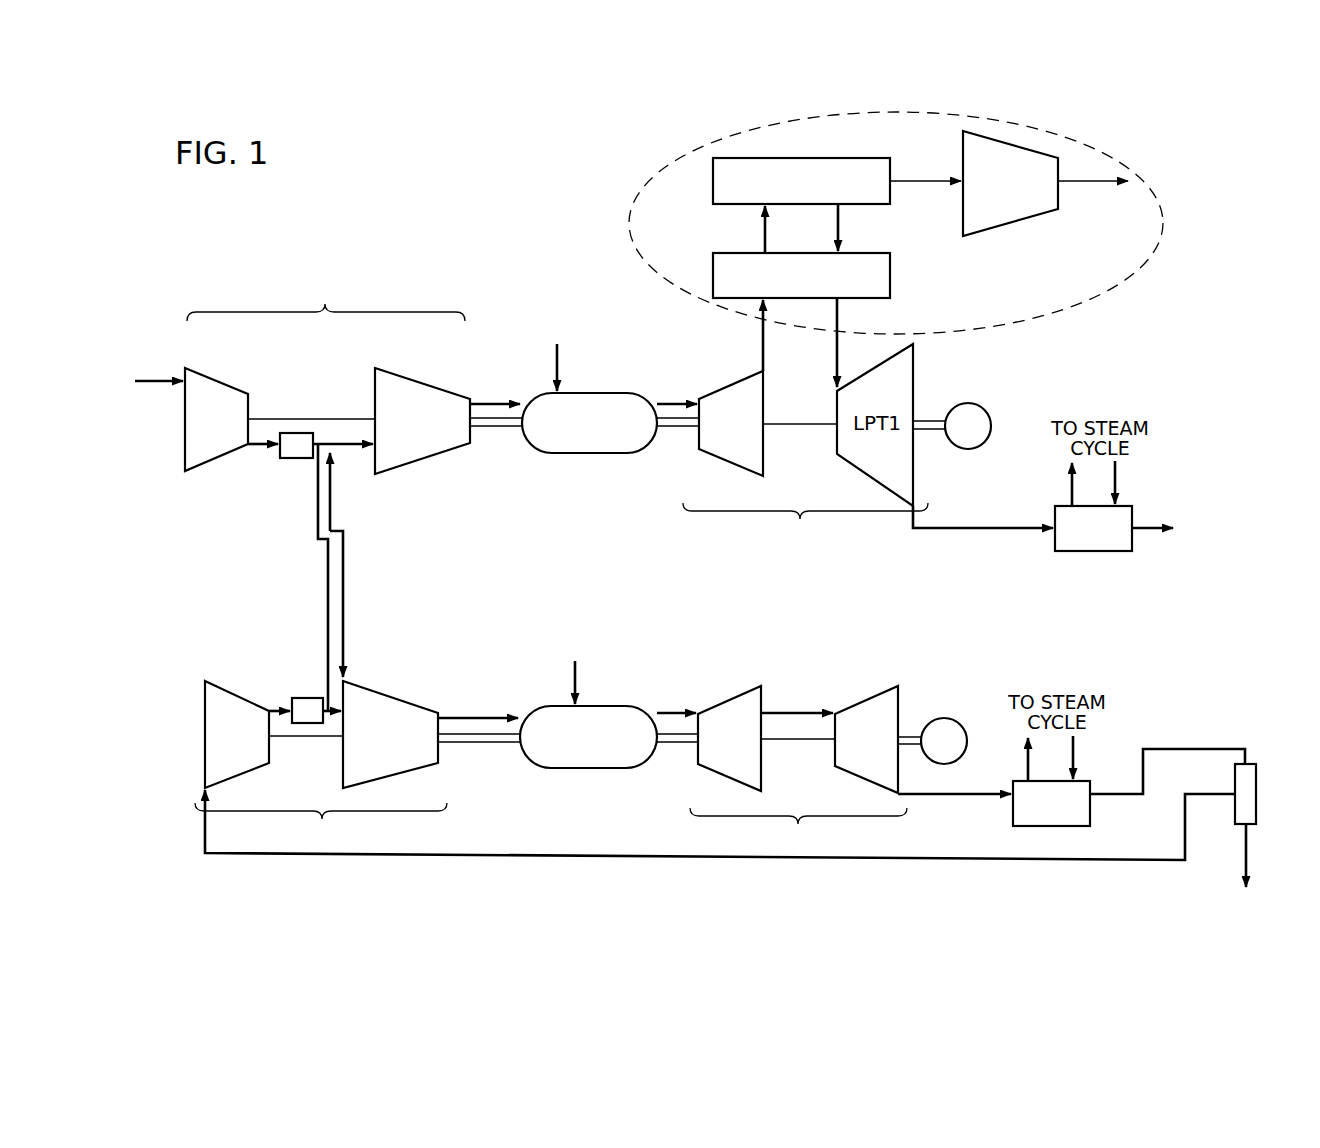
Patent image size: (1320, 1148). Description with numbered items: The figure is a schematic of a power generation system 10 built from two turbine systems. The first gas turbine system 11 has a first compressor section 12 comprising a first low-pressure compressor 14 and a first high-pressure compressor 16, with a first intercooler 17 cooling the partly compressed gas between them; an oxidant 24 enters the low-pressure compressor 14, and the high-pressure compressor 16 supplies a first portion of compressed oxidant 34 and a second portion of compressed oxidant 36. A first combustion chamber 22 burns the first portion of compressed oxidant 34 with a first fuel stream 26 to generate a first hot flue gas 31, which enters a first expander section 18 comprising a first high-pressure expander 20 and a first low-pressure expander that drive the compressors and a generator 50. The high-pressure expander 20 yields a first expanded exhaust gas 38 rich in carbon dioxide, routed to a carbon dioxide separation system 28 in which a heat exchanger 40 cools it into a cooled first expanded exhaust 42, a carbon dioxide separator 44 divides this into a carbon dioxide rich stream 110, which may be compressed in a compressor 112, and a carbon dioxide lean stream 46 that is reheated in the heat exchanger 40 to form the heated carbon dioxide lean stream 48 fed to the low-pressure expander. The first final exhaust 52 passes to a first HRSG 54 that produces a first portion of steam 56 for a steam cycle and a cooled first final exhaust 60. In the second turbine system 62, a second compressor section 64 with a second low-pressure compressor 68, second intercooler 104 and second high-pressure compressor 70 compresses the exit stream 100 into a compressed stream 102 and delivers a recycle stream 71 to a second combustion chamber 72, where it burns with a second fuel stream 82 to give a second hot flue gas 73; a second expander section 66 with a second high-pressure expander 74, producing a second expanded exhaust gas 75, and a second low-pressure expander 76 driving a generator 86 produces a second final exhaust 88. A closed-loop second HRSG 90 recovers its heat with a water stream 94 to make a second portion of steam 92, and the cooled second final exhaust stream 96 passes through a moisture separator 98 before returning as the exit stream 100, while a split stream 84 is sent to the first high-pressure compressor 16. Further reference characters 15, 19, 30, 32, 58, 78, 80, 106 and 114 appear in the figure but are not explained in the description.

The power generation system 10 is at (338, 206).
The gas turbine system 11 is at (514, 252).
The first compressor section 12 is at (326, 300).
The first low-pressure compressor 14 is at (216, 378).
The flow path from LPC1 to intercooler 15 is at (258, 452).
The first high-pressure compressor 16 is at (422, 376).
The first intercooler 17 is at (292, 460).
The first expander section 18 is at (805, 483).
The flow path from intercooler to HPC1 19 is at (341, 440).
The first high-pressure expander 20 is at (731, 458).
The first combustion chamber 22 is at (610, 390).
The oxidant 24 is at (165, 372).
The first fuel stream 26 is at (560, 355).
The CO2 separation system 28 is at (682, 150).
The LPC1 to HPC1 connection 30 is at (270, 412).
The first hot flue gas 31 is at (667, 400).
The shaft 32 is at (500, 428).
The first portion of compressed oxidant 34 is at (496, 398).
The second portion of compressed oxidant 36 is at (346, 578).
The first expanded exhaust gas 38 is at (760, 352).
The heat exchanger 40 is at (893, 272).
The cooled first expanded exhaust 42 is at (760, 226).
The CO2 separator 44 is at (827, 160).
The CO2 lean stream 46 is at (842, 226).
The heated CO2 lean stream 48 is at (840, 358).
The generator 50 is at (992, 418).
The first final exhaust 52 is at (937, 533).
The first heat recovery steam generator 54 is at (1092, 556).
The first portion of steam 56 is at (1068, 487).
The feedwater inlet from steam cycle 58 is at (1120, 480).
The cooled first final exhaust 60 is at (1150, 533).
The second turbine system 62 is at (541, 880).
The second compressor section 64 is at (321, 824).
The second expander section 66 is at (798, 828).
The second low-pressure compressor 68 is at (238, 690).
The second high-pressure compressor 70 is at (392, 694).
The recycle stream 71 is at (478, 712).
The second combustion chamber 72 is at (606, 703).
The second hot flue gas 73 is at (660, 708).
The second high-pressure expander 74 is at (727, 696).
The second expanded exhaust gas 75 is at (786, 710).
The second low-pressure expander 76 is at (866, 698).
The second intercooler / shaft 78 is at (306, 694).
The second train shaft 80 is at (478, 744).
The second fuel stream 82 is at (572, 670).
The split stream 84 is at (326, 588).
The generator 86 is at (946, 714).
The second final exhaust 88 is at (950, 797).
The second heat recovery steam generator 90 is at (1050, 828).
The second portion of steam 92 is at (1024, 766).
The water stream 94 is at (1078, 764).
The cooled second final exhaust stream 96 is at (1186, 746).
The moisture separator 98 is at (1252, 760).
The exit stream 100 is at (928, 862).
The compressed stream 102 is at (280, 704).
The second intercooler 104 is at (302, 738).
The second intercooler outlet to HPC2 106 is at (335, 718).
The CO2 rich stream 110 is at (924, 178).
The compressor 112 is at (1020, 226).
The compressed CO2 outlet 114 is at (1087, 185).